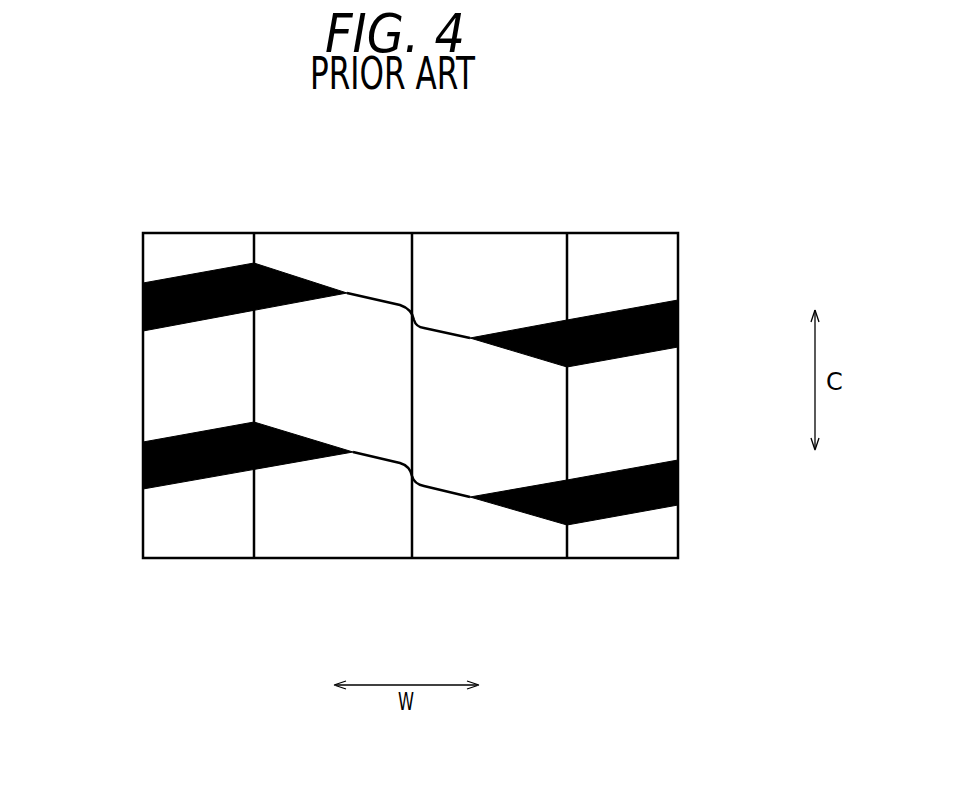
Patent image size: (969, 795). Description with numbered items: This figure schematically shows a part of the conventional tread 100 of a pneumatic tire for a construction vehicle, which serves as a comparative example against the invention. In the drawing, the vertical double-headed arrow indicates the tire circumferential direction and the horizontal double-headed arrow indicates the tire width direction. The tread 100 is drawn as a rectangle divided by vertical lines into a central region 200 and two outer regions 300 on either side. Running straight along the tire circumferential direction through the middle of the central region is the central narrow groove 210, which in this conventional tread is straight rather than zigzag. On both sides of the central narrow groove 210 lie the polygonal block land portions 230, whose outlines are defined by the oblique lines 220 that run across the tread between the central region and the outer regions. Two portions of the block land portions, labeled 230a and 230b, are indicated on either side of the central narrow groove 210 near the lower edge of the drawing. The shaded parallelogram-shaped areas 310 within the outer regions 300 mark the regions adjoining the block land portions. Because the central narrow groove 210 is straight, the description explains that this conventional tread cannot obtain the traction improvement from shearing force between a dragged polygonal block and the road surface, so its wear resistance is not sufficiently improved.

The tread 100 is at (553, 114).
The central portion 200 is at (542, 215).
The central narrow groove 210 is at (412, 530).
The conductor boundary line 220 is at (368, 457).
The polygonal block land portion 230 is at (293, 375).
The insulating region portion 230a is at (541, 542).
The insulating region portion 230b is at (377, 542).
The end portions 300 is at (275, 215).
The conductor (shaded portion) 310 is at (678, 318).